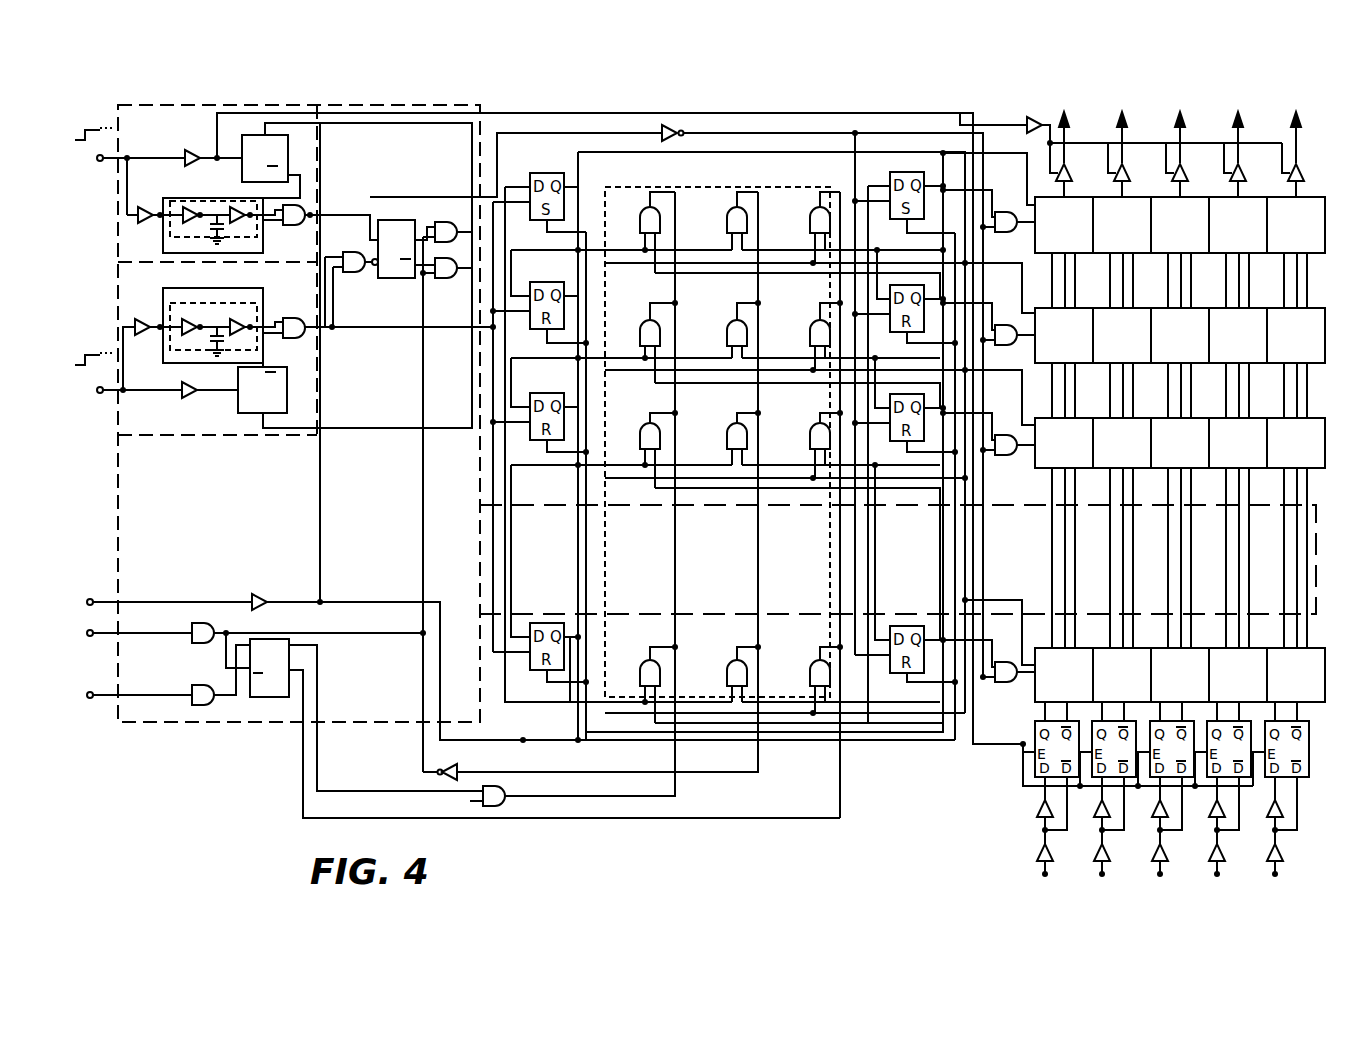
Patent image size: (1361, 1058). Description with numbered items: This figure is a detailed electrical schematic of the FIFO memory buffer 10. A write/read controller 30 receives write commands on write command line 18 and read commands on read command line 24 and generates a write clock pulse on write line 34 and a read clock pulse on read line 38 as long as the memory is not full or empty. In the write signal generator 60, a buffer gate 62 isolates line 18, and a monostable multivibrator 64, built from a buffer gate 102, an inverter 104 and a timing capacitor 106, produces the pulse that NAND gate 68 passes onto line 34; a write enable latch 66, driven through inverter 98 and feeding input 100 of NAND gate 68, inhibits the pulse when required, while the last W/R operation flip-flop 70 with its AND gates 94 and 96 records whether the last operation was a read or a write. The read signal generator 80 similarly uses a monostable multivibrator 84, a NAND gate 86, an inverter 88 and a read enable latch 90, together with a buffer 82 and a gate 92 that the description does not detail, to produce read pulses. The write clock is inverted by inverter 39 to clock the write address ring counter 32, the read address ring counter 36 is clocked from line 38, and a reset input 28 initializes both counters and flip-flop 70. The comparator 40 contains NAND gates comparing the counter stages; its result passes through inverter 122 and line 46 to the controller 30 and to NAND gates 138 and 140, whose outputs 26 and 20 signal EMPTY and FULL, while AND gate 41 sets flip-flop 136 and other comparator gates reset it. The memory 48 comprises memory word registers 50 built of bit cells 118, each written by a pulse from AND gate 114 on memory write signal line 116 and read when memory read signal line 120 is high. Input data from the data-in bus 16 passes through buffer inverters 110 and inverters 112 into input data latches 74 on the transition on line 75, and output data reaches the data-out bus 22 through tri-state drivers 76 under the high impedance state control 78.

The FIFO memory buffer 10 is at (666, 873).
The data-in bus 16 is at (1289, 886).
The write command line 18 is at (98, 166).
The FULL output 20 is at (95, 705).
The data-out bus 22 is at (1313, 98).
The read command line 24 is at (100, 398).
The EMPTY output 26 is at (95, 645).
The reset input 28 is at (95, 598).
The write/read controller 30 is at (266, 413).
The write address ring counter 32 is at (908, 172).
The write line 34 is at (383, 197).
The read address ring counter 36 is at (548, 172).
The read line 38 is at (370, 330).
The inverter 39 is at (672, 125).
The comparator 40 is at (755, 186).
The AND gate 41 is at (480, 798).
The line 46 is at (420, 758).
The memory 48 is at (1196, 438).
The memory word register 50 is at (1322, 253).
The write signal generator 60 is at (152, 132).
The buffer gate 62 is at (102, 217).
The monostable multivibrator 64 is at (221, 212).
The write enable latch 66 is at (288, 150).
The NAND gate 68 is at (308, 212).
The last W/R operation flip-flop 70 is at (394, 278).
The input data latch 74 is at (1312, 750).
The line 75 is at (1018, 744).
The tri-state drivers 76 is at (1304, 176).
The high impedance state control 78 is at (1018, 118).
The read signal generator 80 is at (152, 290).
The buffer 82 is at (148, 335).
The monostable multivibrator 84 is at (176, 352).
The NAND gate 86 is at (298, 318).
The inverter 88 is at (190, 397).
The read enable latch 90 is at (284, 370).
The AND gate 92 is at (354, 252).
The AND gate 94 is at (438, 278).
The AND gate 96 is at (440, 226).
The write command inverter 98 is at (195, 150).
The input of NAND gate 68 100 is at (300, 185).
The buffer gate 102 is at (186, 207).
The inverter 104 is at (236, 207).
The timing capacitor 106 is at (226, 240).
The buffer inverters 110 is at (1034, 852).
The inverters 112 is at (1034, 808).
The AND gate 114 is at (1004, 214).
The memory write signal line 116 is at (1017, 234).
The bit storage area 118 is at (1030, 262).
The memory read signal line 120 is at (1020, 188).
The inverter 122 is at (460, 768).
The flip-flop 136 is at (293, 650).
The NAND gate 138 is at (196, 627).
The NAND gate 140 is at (196, 690).